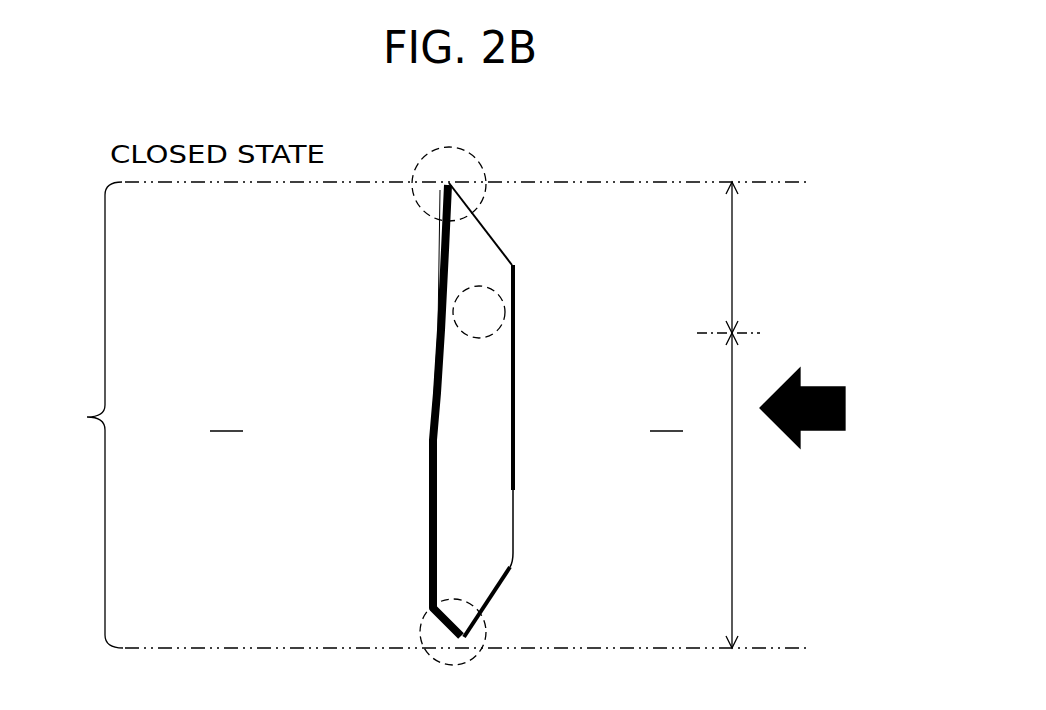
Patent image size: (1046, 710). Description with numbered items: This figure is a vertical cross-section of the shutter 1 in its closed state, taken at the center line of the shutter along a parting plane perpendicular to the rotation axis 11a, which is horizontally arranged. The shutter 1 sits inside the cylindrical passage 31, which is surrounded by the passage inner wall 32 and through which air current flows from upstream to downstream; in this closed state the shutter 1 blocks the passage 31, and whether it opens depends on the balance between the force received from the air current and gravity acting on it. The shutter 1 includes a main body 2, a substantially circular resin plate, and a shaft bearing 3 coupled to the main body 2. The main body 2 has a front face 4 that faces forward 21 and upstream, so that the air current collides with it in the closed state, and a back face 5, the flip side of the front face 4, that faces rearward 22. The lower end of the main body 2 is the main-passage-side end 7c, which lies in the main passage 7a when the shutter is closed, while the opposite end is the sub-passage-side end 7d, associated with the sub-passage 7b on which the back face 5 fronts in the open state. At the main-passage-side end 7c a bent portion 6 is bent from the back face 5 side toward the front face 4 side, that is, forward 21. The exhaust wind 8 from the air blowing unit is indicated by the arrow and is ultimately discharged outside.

The shutter 1 is at (407, 375).
The main body 2 is at (437, 342).
The shaft bearing 3 is at (456, 287).
The front face 4 is at (440, 388).
The back face 5 is at (430, 448).
The bent portion 6 is at (433, 628).
The main passage 7a is at (732, 502).
The sub-passage 7b is at (732, 250).
The main-passage-side end 7c is at (488, 627).
The sub-passage-side end 7d is at (481, 199).
The exhaust wind 8 is at (840, 383).
The rotation axis 11a is at (482, 312).
The forward 21 is at (666, 415).
The rearward 22 is at (226, 415).
The passage 31 is at (86, 415).
The passage inner wall 32 is at (672, 183).